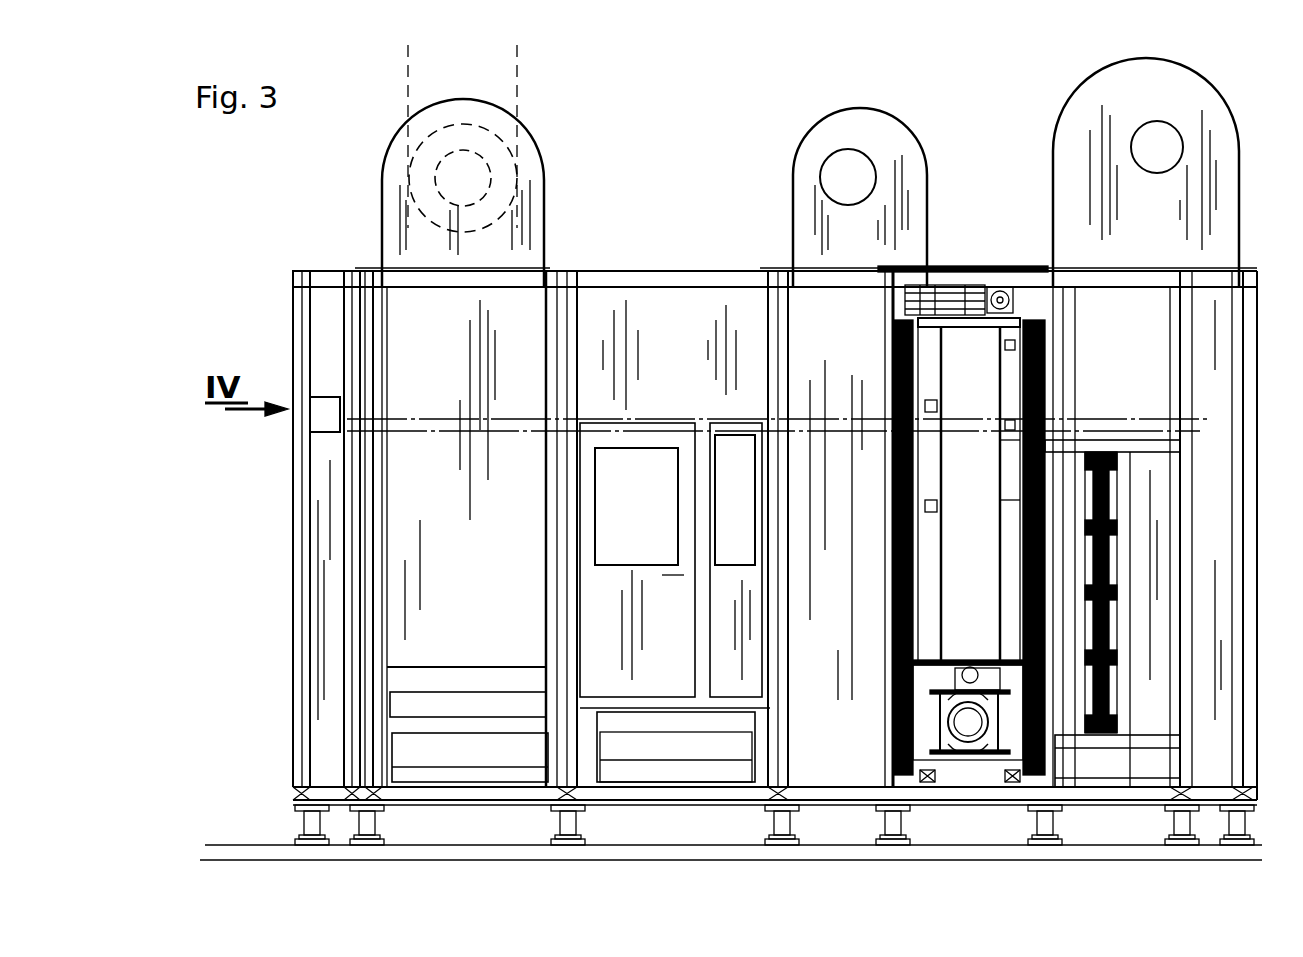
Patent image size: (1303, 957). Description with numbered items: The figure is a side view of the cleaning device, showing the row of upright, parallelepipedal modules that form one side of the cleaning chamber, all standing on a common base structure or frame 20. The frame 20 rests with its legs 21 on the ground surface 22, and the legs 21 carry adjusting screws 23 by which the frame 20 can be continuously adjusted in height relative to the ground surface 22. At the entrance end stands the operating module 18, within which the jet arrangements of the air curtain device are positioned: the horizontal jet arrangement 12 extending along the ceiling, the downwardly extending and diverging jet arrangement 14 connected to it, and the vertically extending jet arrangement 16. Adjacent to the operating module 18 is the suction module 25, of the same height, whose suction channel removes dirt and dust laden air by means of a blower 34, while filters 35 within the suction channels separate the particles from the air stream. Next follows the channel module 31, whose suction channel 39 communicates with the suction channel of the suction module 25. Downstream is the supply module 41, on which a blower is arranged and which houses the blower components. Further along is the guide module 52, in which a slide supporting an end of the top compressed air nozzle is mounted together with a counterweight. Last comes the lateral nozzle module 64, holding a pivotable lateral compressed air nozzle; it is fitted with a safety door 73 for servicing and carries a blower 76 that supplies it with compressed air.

The jet arrangement 12 is at (310, 420).
The jet arrangement 14 is at (322, 490).
The jet arrangement 16 is at (322, 655).
The operating module 18 is at (322, 320).
The frame 20 is at (692, 806).
The legs 21 is at (315, 838).
The ground surface 22 is at (212, 845).
The adjusting screws 23 is at (562, 842).
The suction module 25 is at (508, 342).
The channel module 31 is at (683, 300).
The blower 34 is at (522, 224).
The filters 35 is at (438, 680).
The suction channel 39 is at (641, 752).
The supply module 41 is at (808, 310).
The guide module 52 is at (966, 585).
The lateral nozzle module 64 is at (1105, 350).
The safety door 73 is at (902, 182).
The blower 76 is at (1080, 182).